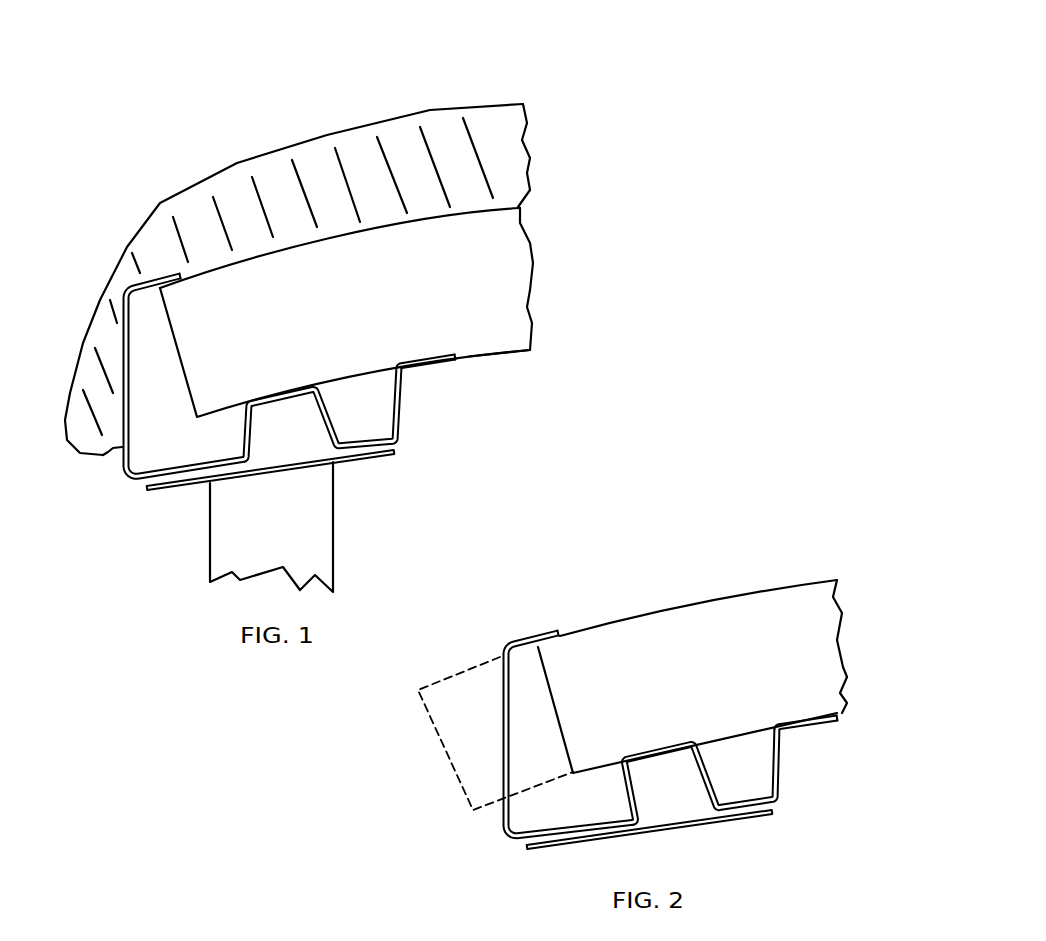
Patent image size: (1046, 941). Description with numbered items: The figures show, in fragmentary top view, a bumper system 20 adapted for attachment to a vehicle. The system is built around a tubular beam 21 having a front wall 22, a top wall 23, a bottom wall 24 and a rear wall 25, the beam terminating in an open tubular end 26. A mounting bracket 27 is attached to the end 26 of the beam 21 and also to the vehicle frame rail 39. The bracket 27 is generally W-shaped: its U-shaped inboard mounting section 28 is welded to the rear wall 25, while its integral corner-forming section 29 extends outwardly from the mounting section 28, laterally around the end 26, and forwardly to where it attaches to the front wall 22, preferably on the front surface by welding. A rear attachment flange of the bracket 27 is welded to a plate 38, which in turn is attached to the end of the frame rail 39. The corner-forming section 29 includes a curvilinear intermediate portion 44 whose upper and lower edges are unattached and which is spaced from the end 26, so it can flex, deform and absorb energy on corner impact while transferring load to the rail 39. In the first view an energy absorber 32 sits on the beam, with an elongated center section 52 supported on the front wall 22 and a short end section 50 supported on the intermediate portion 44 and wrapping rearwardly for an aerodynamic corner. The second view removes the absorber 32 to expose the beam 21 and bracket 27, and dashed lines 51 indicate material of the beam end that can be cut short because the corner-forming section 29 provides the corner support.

In FIG. 1, the bumper system 20 is at (440, 68).
In FIG. 1, the beam 21 is at (518, 378).
In FIG. 2, the beam 21 is at (848, 747).
In FIG. 1, the front wall 22 is at (505, 210).
In FIG. 1, the top wall 23 is at (483, 311).
In FIG. 2, the top wall 23 is at (794, 684).
In FIG. 1, the bottom wall 24 is at (535, 245).
In FIG. 1, the rear wall 25 is at (525, 352).
In FIG. 1, the open tubular end 26 is at (207, 290).
In FIG. 1, the mounting bracket 27 is at (440, 421).
In FIG. 1, the inboard mounting section 28 is at (360, 388).
In FIG. 2, the inboard mounting section 28 is at (785, 760).
In FIG. 2, the corner-forming section 29 is at (500, 763).
In FIG. 1, the energy absorber 32 is at (240, 130).
In FIG. 1, the plate 38 is at (170, 490).
In FIG. 2, the plate 38 is at (687, 828).
In FIG. 1, the vehicle frame rail 39 is at (333, 490).
In FIG. 1, the intermediate portion 44 is at (120, 450).
In FIG. 1, the end section 50 is at (110, 302).
In FIG. 2, the dashed lines 51 is at (453, 677).
In FIG. 1, the center section 52 is at (344, 133).